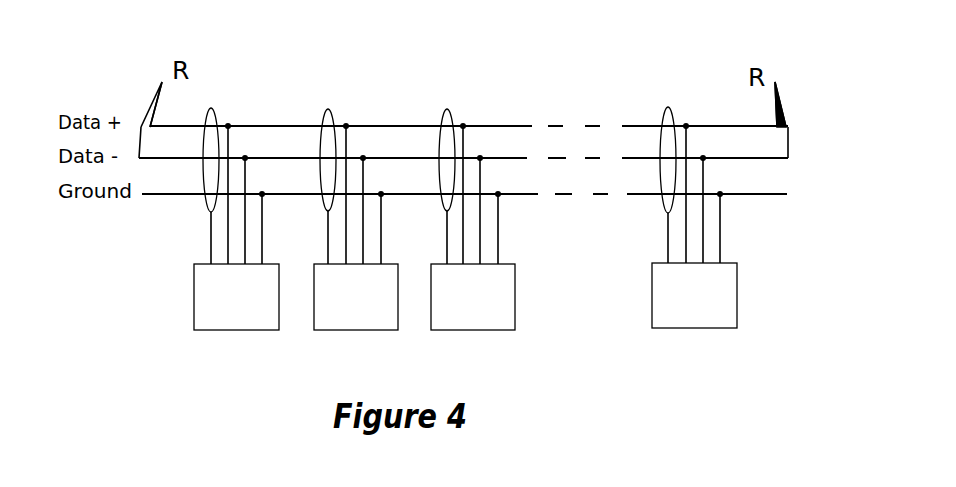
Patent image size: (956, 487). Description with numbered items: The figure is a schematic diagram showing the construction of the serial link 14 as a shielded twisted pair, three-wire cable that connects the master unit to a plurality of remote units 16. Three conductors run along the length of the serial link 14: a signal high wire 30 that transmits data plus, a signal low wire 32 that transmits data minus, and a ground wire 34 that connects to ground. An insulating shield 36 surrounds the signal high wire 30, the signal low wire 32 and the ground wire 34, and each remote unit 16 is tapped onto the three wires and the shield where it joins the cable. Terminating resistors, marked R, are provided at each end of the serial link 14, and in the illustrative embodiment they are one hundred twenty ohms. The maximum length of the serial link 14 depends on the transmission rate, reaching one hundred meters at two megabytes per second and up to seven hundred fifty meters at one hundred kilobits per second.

The serial link 14 is at (495, 127).
The remote units 16 is at (277, 320).
The signal high wire 30 is at (242, 123).
The signal low wire 32 is at (377, 158).
The ground wire 34 is at (520, 193).
The insulating shield 36 is at (660, 108).